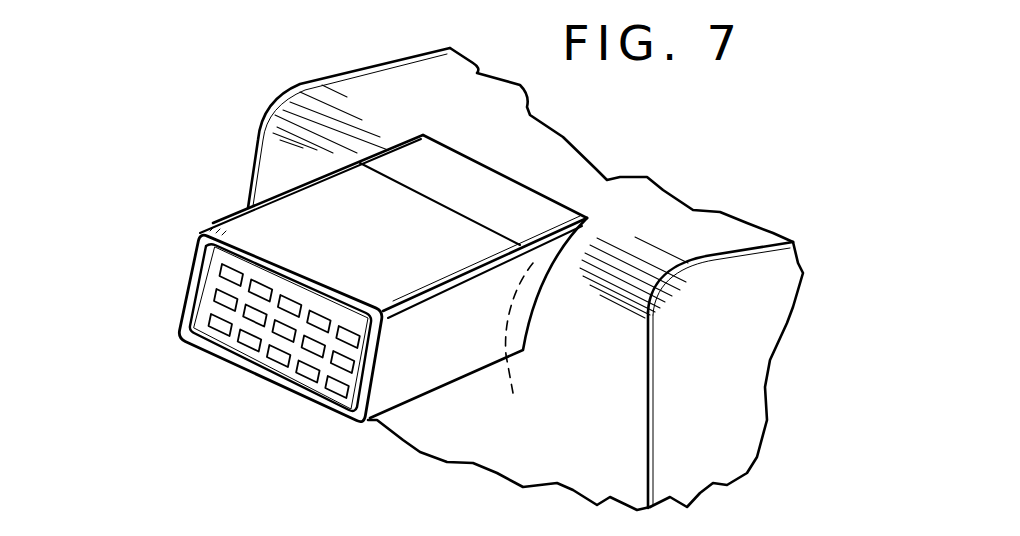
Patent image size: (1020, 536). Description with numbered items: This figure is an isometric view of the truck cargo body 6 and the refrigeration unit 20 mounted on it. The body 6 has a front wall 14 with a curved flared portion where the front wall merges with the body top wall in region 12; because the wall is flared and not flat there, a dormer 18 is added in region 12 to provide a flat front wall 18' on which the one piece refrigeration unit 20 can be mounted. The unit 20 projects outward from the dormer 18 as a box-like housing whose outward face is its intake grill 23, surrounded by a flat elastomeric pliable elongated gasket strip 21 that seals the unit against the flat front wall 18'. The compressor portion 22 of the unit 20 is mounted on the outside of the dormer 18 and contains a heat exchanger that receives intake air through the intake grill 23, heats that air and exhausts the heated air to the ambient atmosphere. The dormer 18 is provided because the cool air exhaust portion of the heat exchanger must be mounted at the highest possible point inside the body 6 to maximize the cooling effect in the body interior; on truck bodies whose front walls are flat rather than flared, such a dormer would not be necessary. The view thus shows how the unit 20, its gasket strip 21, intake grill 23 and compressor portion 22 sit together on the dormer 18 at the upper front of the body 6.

The cargo body 6 is at (548, 279).
The region 12 is at (630, 278).
The front wall 14 is at (603, 430).
The dormer 18 is at (494, 174).
The flat front wall 18' is at (532, 339).
The refrigeration unit 20 is at (363, 262).
The gasket strip 21 is at (197, 273).
The compressor portion 22 is at (297, 218).
The intake grill 23 is at (247, 317).